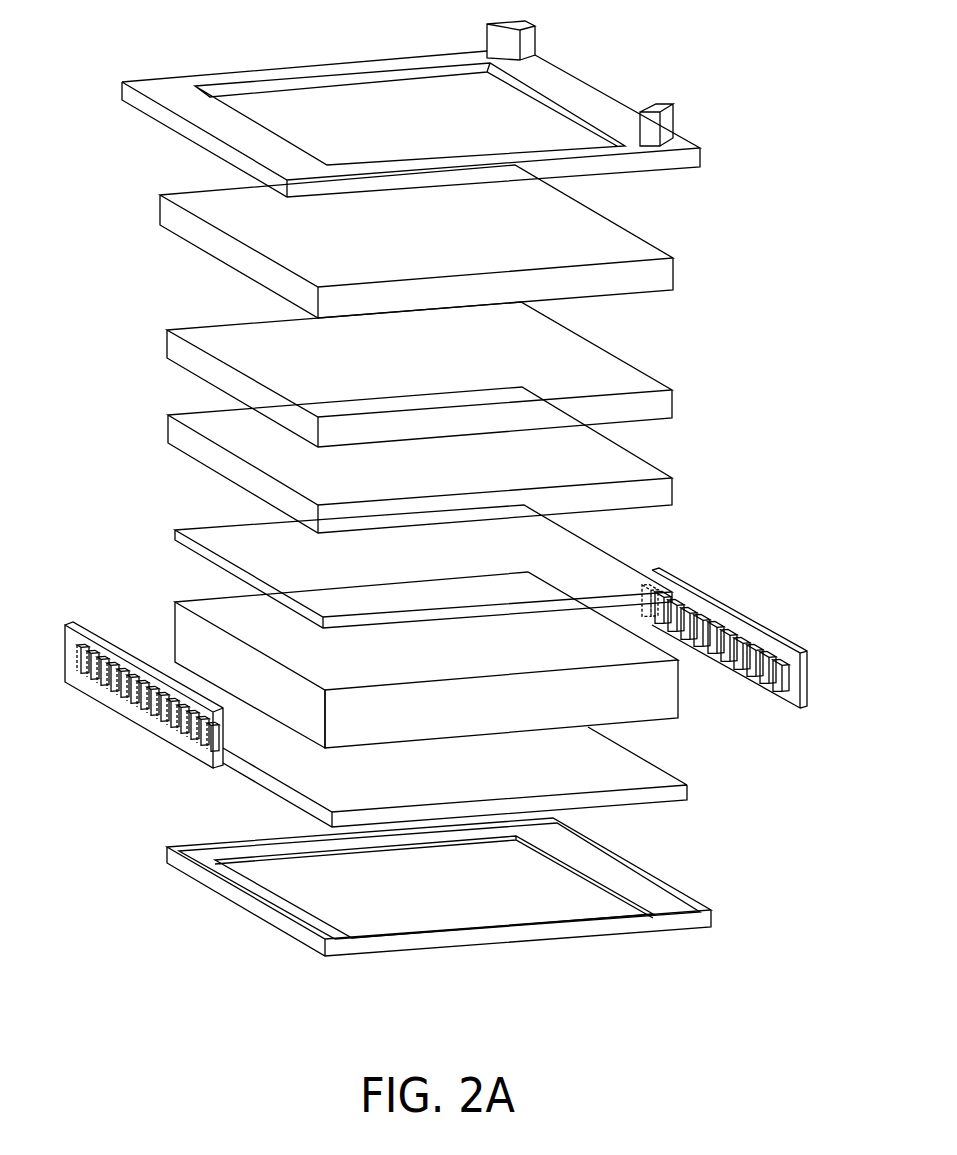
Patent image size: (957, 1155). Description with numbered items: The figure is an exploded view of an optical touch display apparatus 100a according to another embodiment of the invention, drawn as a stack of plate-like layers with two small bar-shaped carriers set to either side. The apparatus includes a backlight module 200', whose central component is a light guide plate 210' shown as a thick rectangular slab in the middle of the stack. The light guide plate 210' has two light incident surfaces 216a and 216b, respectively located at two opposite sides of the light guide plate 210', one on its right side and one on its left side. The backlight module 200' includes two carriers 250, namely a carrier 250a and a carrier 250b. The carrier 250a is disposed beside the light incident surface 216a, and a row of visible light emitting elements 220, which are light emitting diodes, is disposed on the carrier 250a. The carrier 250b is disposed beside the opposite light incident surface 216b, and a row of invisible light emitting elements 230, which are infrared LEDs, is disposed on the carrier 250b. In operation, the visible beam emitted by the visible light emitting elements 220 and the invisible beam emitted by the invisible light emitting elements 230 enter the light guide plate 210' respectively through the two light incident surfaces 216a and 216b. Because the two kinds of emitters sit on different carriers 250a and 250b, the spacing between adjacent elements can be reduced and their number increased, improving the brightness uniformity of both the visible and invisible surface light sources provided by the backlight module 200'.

The touch display apparatus 100a is at (770, 1013).
The backlight module 200' is at (435, 723).
The light guide plate 210' is at (481, 777).
The light incident surface 216a is at (647, 710).
The light incident surface 216b is at (305, 704).
The visible light emitting elements 220 is at (768, 686).
The invisible light emitting elements 230 is at (77, 682).
The carriers 250 is at (435, 667).
The carrier 250a is at (742, 613).
The carrier 250b is at (138, 717).